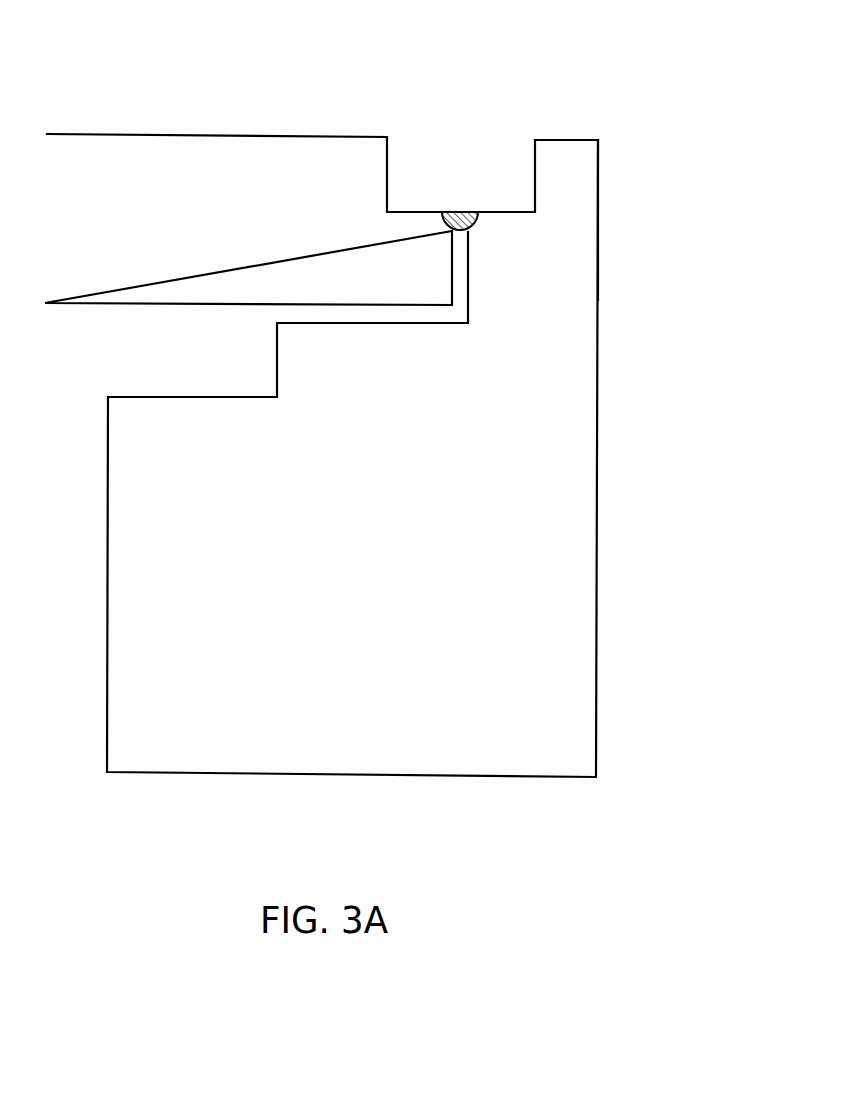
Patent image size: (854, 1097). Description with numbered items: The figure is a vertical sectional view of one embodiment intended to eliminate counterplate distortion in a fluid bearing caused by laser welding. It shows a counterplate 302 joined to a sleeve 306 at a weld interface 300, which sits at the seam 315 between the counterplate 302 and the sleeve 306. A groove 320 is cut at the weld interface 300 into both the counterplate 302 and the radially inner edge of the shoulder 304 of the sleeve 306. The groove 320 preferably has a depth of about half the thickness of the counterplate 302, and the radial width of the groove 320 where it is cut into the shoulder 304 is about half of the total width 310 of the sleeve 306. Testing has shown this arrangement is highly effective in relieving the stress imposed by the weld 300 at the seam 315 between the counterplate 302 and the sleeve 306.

The weld interface 300 is at (462, 210).
The counterplate 302 is at (167, 134).
The shoulder 304 is at (598, 187).
The sleeve 306 is at (583, 443).
The total width 310 is at (470, 278).
The seam 315 is at (460, 265).
The groove 320 is at (447, 130).